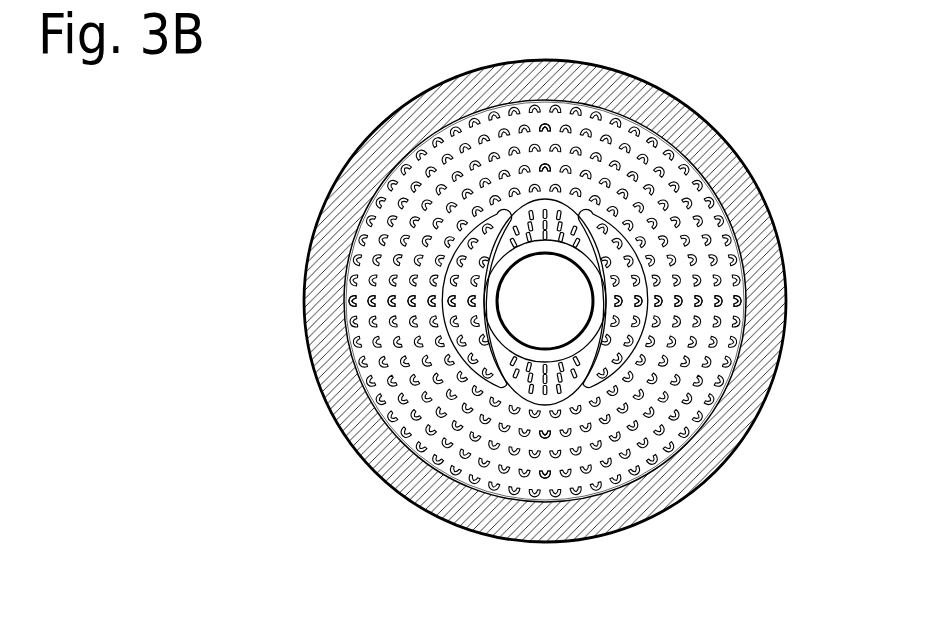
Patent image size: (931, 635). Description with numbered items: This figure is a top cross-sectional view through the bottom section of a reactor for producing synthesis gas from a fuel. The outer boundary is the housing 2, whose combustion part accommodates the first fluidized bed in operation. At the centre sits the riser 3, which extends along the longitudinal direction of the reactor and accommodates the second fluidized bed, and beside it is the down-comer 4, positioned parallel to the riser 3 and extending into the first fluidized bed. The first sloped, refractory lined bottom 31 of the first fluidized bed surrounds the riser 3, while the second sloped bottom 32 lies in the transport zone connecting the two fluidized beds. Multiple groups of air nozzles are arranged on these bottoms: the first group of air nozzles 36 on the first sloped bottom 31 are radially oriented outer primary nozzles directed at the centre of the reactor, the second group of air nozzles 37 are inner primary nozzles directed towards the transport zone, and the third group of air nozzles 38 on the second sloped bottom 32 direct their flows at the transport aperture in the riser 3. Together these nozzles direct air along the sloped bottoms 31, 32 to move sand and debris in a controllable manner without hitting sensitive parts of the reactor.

The housing 2 is at (650, 108).
The riser 3 is at (590, 282).
The down-comer 4 is at (597, 341).
The first sloped bottom 31 is at (685, 192).
The second sloped bottom 32 is at (577, 245).
The first group of air nozzles 36 is at (723, 317).
The second group of air nozzles 37 is at (467, 230).
The third group of air nozzles 38 is at (547, 210).